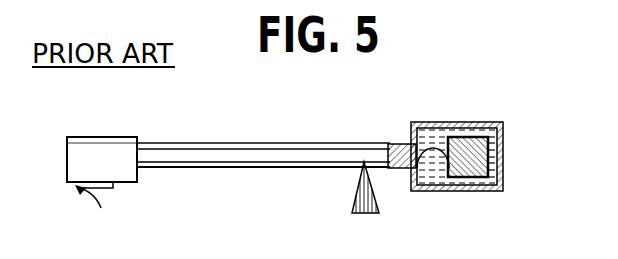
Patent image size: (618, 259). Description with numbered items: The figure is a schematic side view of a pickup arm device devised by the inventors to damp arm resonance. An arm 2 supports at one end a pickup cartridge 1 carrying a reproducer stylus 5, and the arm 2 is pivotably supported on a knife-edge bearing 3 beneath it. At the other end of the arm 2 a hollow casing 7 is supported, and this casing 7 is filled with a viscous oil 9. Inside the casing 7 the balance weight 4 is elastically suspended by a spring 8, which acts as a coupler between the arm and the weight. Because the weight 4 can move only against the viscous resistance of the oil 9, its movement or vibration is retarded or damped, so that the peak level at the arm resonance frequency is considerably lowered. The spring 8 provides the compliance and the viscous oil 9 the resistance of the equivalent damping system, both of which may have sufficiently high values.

The pickup cartridge 1 is at (104, 150).
The arm 2 is at (224, 143).
The knife-edge bearing 3 is at (360, 198).
The balance weight 4 is at (490, 150).
The reproducer stylus 5 is at (96, 206).
The hollow casing 7 is at (482, 191).
The spring 8 is at (432, 158).
The viscous oil 9 is at (466, 130).